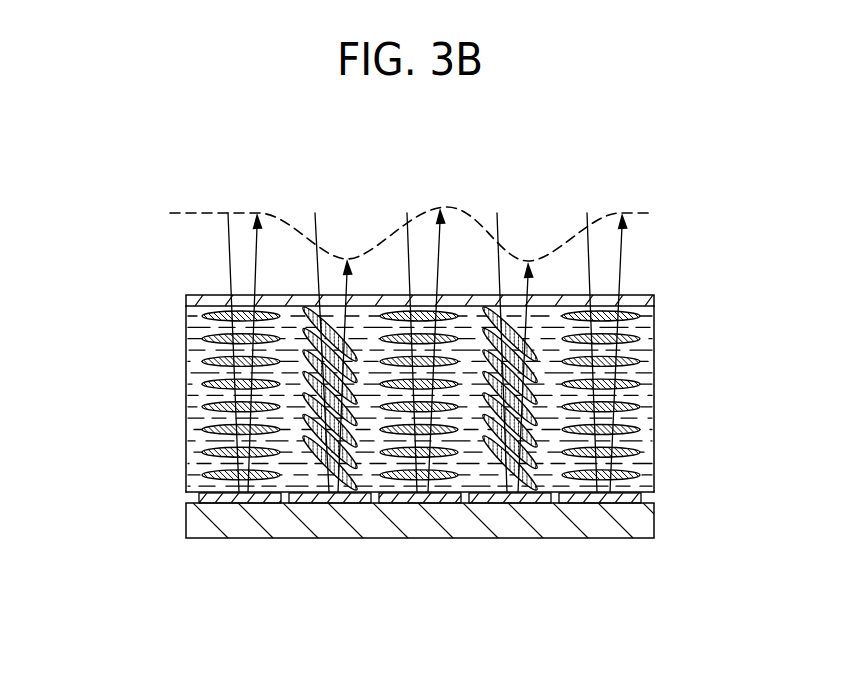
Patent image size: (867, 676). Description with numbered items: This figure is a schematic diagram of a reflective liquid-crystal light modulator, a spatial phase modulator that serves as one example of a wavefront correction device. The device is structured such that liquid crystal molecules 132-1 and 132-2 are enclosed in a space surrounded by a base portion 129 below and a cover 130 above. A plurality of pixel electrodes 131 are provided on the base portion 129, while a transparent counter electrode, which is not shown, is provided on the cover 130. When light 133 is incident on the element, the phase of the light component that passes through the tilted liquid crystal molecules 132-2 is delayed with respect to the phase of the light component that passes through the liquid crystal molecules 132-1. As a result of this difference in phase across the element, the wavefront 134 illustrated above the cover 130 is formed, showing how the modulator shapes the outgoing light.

The base portion 129 is at (236, 538).
The cover 130 is at (205, 300).
The pixel electrodes 131 is at (203, 500).
The liquid crystal molecules 132-1 is at (190, 408).
The liquid crystal molecules 132-2 is at (342, 500).
The light 133 is at (227, 241).
The wavefront 134 is at (452, 205).